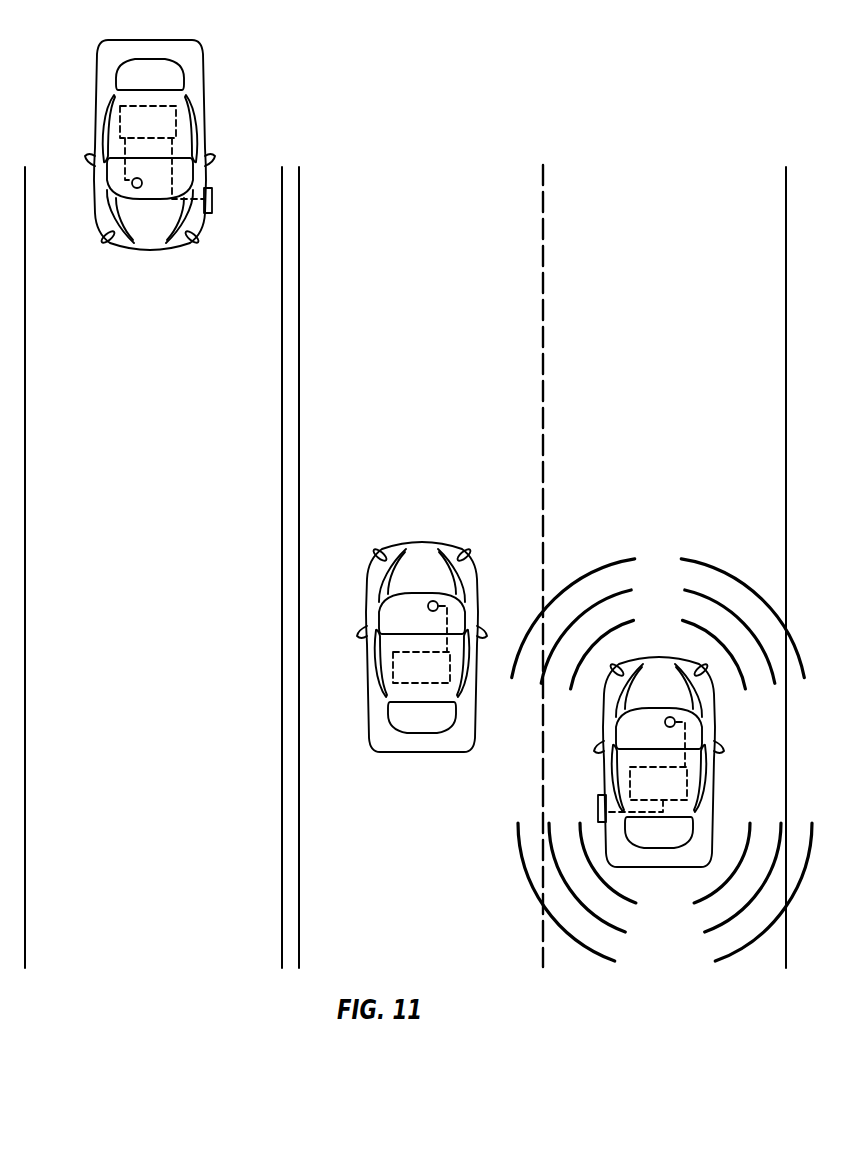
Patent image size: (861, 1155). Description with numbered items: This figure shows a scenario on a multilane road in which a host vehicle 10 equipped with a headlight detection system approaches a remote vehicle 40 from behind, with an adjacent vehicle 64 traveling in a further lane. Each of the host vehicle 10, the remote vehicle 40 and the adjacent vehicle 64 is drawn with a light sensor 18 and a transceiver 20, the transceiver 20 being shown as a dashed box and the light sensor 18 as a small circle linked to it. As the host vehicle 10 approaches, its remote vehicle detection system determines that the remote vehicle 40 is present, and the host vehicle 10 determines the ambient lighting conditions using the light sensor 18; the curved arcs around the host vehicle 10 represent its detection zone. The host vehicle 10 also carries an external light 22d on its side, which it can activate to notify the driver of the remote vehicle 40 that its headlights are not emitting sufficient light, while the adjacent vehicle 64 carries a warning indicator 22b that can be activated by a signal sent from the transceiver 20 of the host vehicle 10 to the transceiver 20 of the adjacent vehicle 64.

The host vehicle 10 is at (712, 790).
The light sensor 18 is at (134, 188).
The transceiver 20 is at (150, 107).
The warning indicator 22b is at (213, 203).
The external light 22d is at (598, 810).
The remote vehicle 40 is at (387, 550).
The adjacent vehicle 64 is at (97, 228).